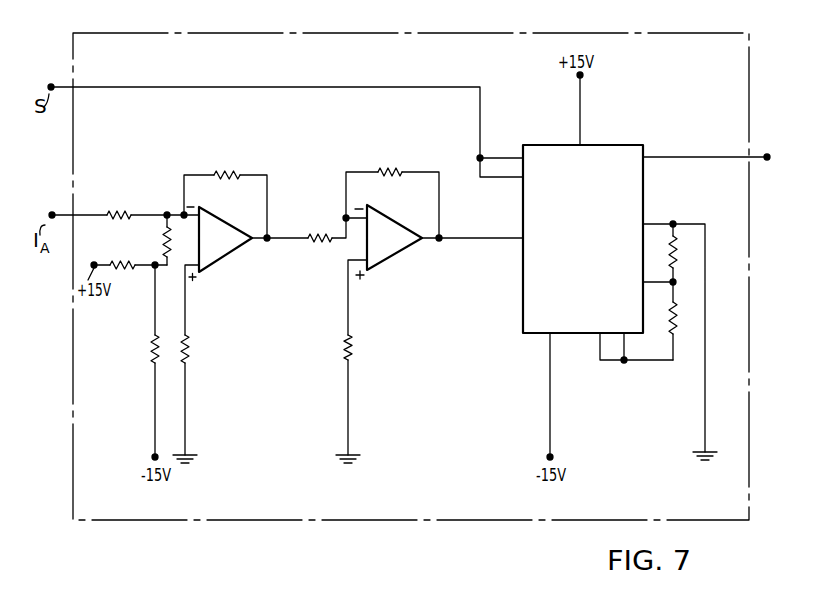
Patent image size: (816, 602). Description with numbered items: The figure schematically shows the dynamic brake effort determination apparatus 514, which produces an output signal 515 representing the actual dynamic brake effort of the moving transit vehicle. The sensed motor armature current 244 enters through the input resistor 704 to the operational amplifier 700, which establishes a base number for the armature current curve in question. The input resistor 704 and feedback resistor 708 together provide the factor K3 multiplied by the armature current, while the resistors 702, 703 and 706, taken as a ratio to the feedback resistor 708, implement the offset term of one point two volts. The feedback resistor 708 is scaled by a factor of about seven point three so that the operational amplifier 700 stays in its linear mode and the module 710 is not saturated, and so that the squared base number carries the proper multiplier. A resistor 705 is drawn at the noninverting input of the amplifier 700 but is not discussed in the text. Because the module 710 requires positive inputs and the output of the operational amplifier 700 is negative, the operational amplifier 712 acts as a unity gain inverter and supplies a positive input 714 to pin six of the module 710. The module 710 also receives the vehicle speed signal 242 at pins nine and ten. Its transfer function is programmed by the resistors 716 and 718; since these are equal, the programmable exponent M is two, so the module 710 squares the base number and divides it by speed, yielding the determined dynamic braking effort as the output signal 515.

The dynamic brake effort determination apparatus 514 is at (153, 33).
The vehicle speed signal 242 is at (59, 85).
The sensed motor armature current 244 is at (56, 209).
The input resistor 704 is at (119, 210).
The resistor 703 is at (161, 222).
The resistor 702 is at (123, 262).
The feedback resistor 708 is at (218, 172).
The operational amplifier 700 is at (218, 262).
The resistor 706 is at (150, 354).
The resistor to ground 705 is at (191, 350).
The operational amplifier 712 is at (385, 265).
The positive input 714 is at (498, 240).
The module 710 is at (523, 286).
The resistor 716 is at (687, 250).
The resistor 718 is at (687, 313).
The output signal 515 is at (768, 150).